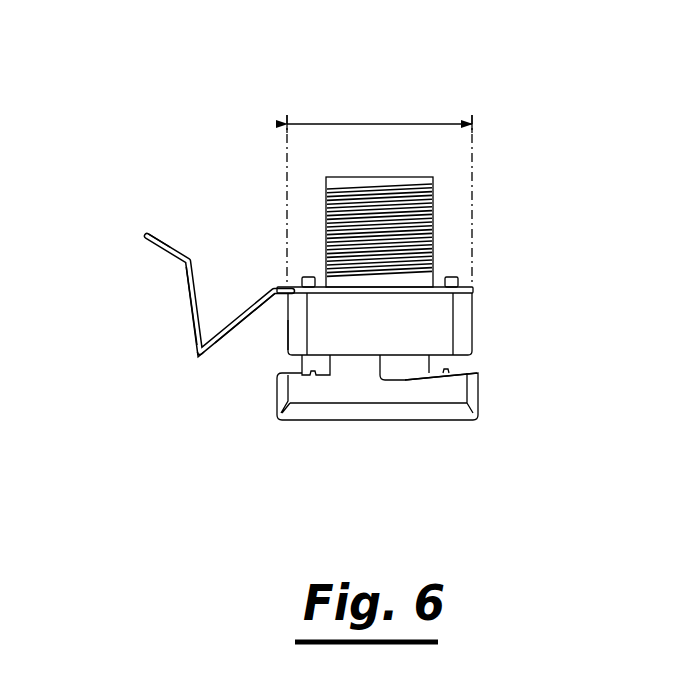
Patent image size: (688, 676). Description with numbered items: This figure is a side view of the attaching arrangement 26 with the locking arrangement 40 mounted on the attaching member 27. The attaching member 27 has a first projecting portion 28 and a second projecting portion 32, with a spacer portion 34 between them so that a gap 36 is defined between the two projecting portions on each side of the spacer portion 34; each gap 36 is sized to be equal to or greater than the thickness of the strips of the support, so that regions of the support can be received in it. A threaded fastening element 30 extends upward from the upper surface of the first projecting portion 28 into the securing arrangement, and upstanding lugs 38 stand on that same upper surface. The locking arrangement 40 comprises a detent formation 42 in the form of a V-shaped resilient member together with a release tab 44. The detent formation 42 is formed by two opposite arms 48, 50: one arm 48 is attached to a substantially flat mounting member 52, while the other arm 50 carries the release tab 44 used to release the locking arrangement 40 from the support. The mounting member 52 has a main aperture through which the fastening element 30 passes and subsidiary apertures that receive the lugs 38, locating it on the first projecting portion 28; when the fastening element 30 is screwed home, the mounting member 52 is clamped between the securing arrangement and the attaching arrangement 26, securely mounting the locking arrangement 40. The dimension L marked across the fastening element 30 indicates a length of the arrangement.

The attaching arrangement 26 is at (483, 322).
The attaching member 27 is at (487, 392).
The first projecting portion 28 is at (283, 327).
The threaded fastening element 30 is at (433, 229).
The second projecting portion 32 is at (442, 393).
The spacer portion 34 is at (402, 368).
The gap 36 is at (301, 372).
The upstanding lugs 38 is at (312, 277).
The locking arrangement 40 is at (168, 238).
The detent formation 42 is at (186, 300).
The release tab 44 is at (145, 242).
The arm 48 is at (251, 312).
The arm 50 is at (195, 330).
The mounting member 52 is at (470, 286).
The length L is at (370, 123).